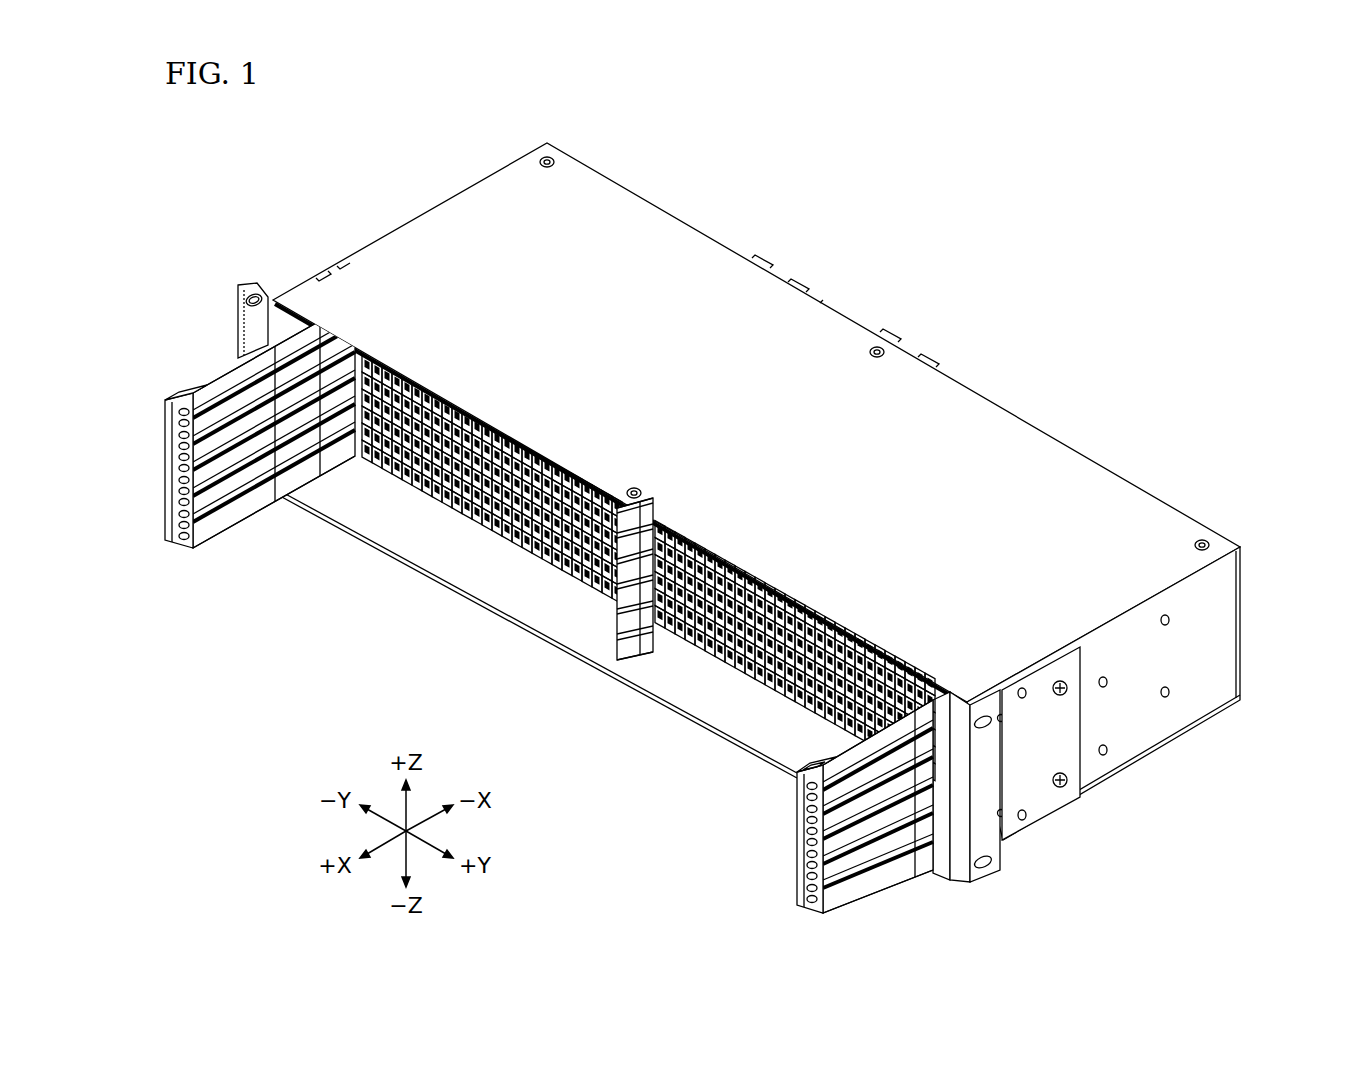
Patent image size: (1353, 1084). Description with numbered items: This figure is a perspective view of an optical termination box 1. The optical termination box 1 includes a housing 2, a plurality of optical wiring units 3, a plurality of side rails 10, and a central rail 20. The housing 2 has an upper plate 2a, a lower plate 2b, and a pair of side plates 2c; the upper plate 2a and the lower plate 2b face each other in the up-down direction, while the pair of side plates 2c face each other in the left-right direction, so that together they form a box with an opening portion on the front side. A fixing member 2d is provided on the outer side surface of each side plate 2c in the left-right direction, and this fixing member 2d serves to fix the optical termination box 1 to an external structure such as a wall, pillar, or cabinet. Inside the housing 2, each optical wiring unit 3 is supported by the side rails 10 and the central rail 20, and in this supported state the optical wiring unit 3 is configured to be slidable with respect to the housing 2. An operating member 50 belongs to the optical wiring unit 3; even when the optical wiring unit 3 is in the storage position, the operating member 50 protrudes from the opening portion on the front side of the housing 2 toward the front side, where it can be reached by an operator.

The optical termination box 1 is at (699, 531).
The housing 2 is at (707, 497).
The upper plate 2a is at (975, 410).
The lower plate 2b is at (362, 518).
The side plate 2c is at (1172, 722).
The fixing member 2d is at (240, 300).
The optical wiring unit 3 is at (680, 684).
The side rail 10 is at (228, 343).
The central rail 20 is at (620, 650).
The operating member 50 is at (800, 775).